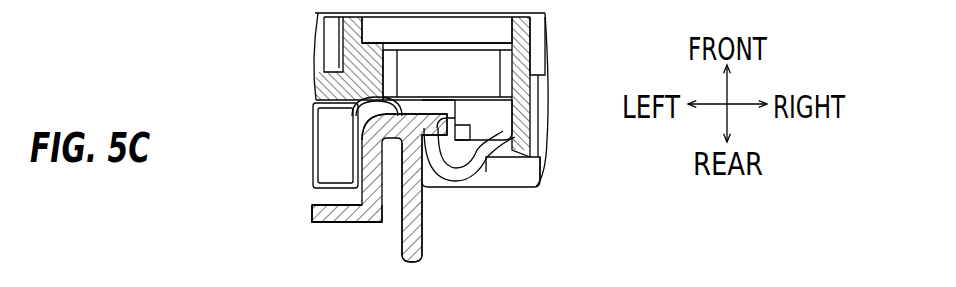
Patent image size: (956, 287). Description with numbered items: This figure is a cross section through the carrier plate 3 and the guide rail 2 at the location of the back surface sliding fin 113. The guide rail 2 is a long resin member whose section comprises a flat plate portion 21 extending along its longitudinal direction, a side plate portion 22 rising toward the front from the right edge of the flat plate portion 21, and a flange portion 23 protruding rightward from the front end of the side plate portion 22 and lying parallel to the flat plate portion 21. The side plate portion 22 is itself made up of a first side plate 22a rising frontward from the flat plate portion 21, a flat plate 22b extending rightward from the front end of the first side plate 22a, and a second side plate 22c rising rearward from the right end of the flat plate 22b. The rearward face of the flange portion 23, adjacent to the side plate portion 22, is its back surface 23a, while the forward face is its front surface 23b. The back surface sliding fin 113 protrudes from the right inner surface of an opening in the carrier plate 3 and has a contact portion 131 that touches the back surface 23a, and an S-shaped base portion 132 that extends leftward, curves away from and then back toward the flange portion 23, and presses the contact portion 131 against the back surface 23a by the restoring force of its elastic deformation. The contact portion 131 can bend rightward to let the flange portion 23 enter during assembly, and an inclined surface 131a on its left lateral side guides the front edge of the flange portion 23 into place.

The guide rail 2 is at (302, 210).
The carrier plate 3 is at (312, 78).
The flat plate portion 21 is at (335, 217).
The side plate portion 22 is at (430, 243).
The first side plate 22a is at (369, 222).
The flat plate 22b is at (383, 100).
The second side plate 22c is at (423, 202).
The flange portion 23 is at (447, 119).
The back surface 23a is at (486, 157).
The front surface 23b is at (443, 112).
The back surface sliding fin 113 is at (477, 172).
The contact portion 131 is at (362, 140).
The inclined surface 131a is at (378, 126).
The base portion 132 is at (488, 163).